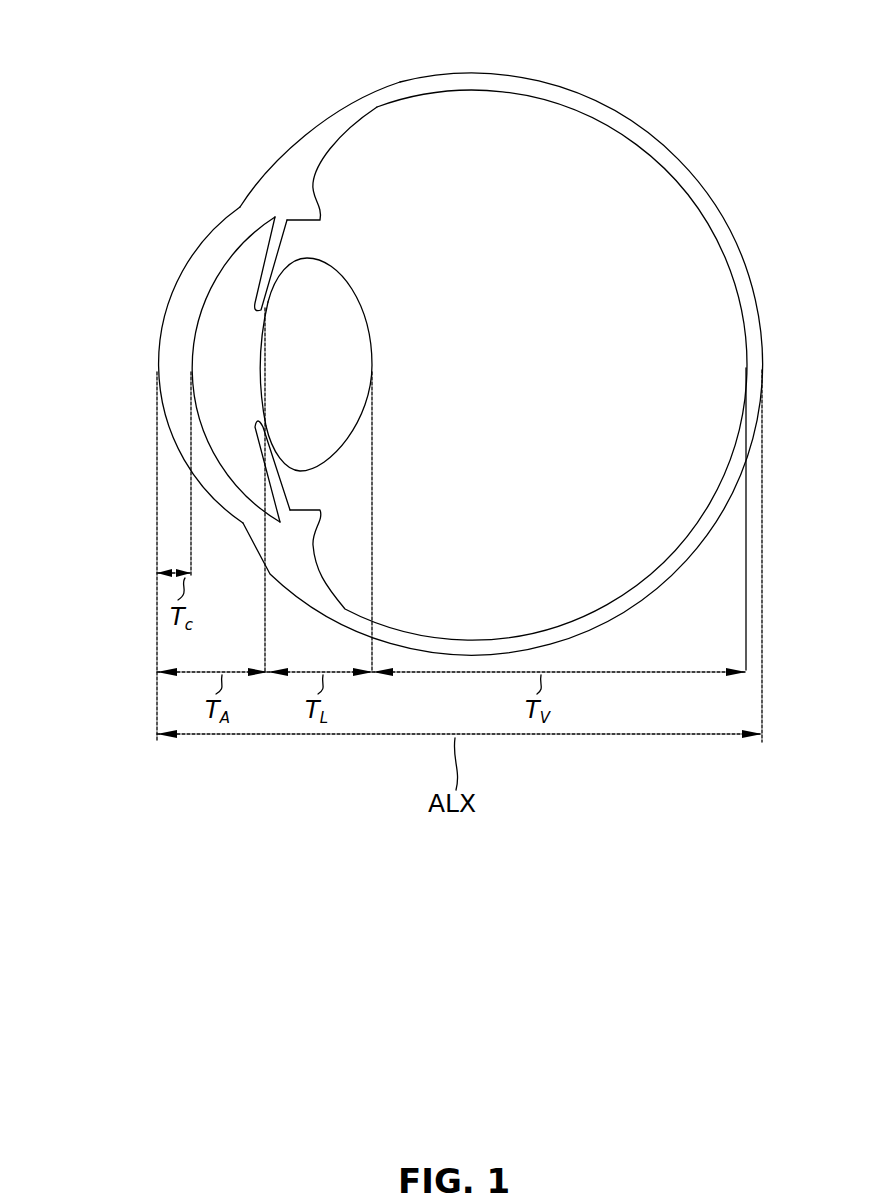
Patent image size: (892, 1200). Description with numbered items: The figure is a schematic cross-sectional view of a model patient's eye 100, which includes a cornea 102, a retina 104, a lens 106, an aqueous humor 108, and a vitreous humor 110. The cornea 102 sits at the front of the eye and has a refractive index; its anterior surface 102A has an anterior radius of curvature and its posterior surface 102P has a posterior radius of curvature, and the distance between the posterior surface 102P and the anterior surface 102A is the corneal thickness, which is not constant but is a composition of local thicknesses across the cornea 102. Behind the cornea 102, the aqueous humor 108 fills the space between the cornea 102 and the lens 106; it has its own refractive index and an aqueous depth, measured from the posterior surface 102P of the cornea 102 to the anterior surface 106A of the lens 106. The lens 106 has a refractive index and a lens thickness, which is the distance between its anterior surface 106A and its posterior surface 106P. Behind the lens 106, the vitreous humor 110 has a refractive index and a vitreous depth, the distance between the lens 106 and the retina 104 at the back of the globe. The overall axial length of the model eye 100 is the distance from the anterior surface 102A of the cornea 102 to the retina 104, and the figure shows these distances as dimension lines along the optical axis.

The model patient's eye 100 is at (435, 336).
The cornea 102 is at (165, 365).
The anterior surface 102A is at (180, 272).
The posterior surface 102P is at (211, 450).
The retina 104 is at (722, 212).
The lens 106 is at (269, 342).
The anterior surface 106A is at (262, 332).
The posterior surface 106P is at (366, 326).
The aqueous humor 108 is at (245, 387).
The vitreous humor 110 is at (487, 593).